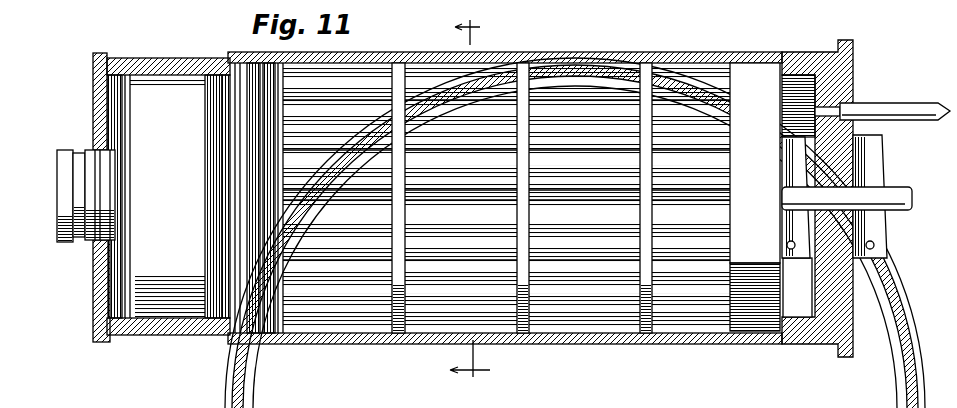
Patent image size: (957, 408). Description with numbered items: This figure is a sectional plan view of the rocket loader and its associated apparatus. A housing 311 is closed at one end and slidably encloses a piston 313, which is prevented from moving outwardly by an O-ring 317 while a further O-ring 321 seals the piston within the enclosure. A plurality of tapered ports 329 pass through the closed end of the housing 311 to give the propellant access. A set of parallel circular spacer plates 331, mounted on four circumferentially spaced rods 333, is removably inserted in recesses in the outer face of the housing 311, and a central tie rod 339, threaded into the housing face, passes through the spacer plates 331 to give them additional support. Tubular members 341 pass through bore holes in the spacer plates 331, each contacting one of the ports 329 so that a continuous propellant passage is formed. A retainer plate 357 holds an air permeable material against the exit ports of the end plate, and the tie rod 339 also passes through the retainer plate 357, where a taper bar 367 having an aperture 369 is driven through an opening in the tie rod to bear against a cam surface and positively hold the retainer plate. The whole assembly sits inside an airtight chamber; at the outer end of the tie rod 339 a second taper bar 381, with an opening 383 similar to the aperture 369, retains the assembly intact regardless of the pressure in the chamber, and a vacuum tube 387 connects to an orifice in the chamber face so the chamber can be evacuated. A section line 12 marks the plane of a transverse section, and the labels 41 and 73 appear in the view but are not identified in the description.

The housing 311 is at (149, 60).
The piston 313 is at (68, 152).
The O-ring 317 is at (112, 72).
The O-ring 321 is at (213, 78).
The tapered ports 329 is at (600, 405).
The spacer plates 331 is at (398, 66).
The rods 333 is at (590, 72).
The tie rod 339 is at (901, 189).
The tubular members 341 is at (365, 115).
The retainer plate 357 is at (759, 75).
The taper bar 367 is at (797, 287).
The aperture 369 is at (798, 179).
The second taper bar 381 is at (882, 233).
The opening 383 is at (869, 258).
The vacuum tube 387 is at (908, 105).
The tubes 41 is at (370, 275).
The rings 73 is at (270, 330).
The section line 12- 12 is at (472, 198).